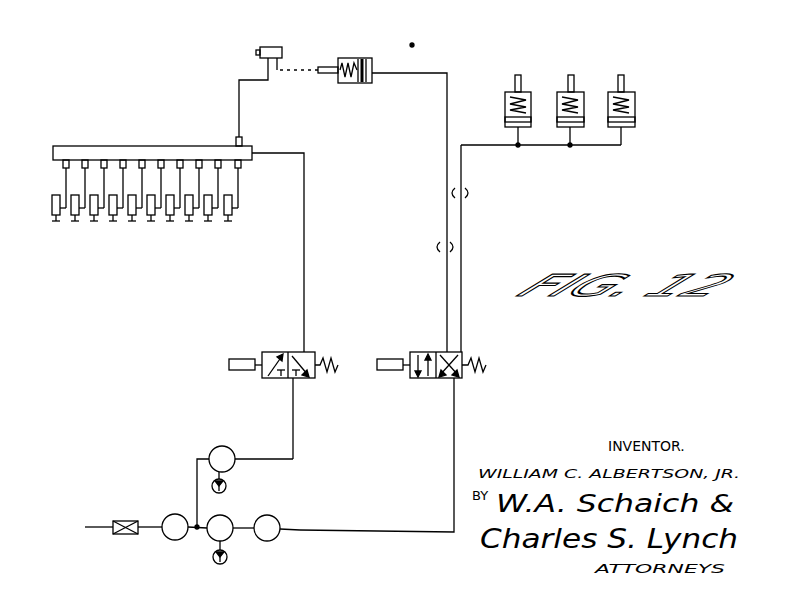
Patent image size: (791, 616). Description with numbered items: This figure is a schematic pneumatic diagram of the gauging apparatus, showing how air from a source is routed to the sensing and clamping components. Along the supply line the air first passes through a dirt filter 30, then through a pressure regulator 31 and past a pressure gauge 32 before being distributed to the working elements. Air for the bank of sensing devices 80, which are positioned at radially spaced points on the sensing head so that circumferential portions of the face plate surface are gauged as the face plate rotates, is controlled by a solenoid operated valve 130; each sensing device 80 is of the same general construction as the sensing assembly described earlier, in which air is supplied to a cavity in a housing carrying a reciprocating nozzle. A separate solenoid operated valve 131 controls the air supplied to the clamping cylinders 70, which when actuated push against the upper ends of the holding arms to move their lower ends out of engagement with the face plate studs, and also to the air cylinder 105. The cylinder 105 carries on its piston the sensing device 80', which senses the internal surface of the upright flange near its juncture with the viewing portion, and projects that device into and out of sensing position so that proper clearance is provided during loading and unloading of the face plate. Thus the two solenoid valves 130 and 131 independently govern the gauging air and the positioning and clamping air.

The sensing devices 80 is at (134, 202).
The sensing device 80' is at (277, 40).
The air cylinder 105 is at (400, 28).
The air cylinder 70 is at (608, 95).
The solenoid operated valve 130 is at (272, 352).
The solenoid operated valve 131 is at (416, 352).
The pressure regulator 31 is at (254, 430).
The pressure gauge 32 is at (227, 486).
The dirt filter 30 is at (174, 514).